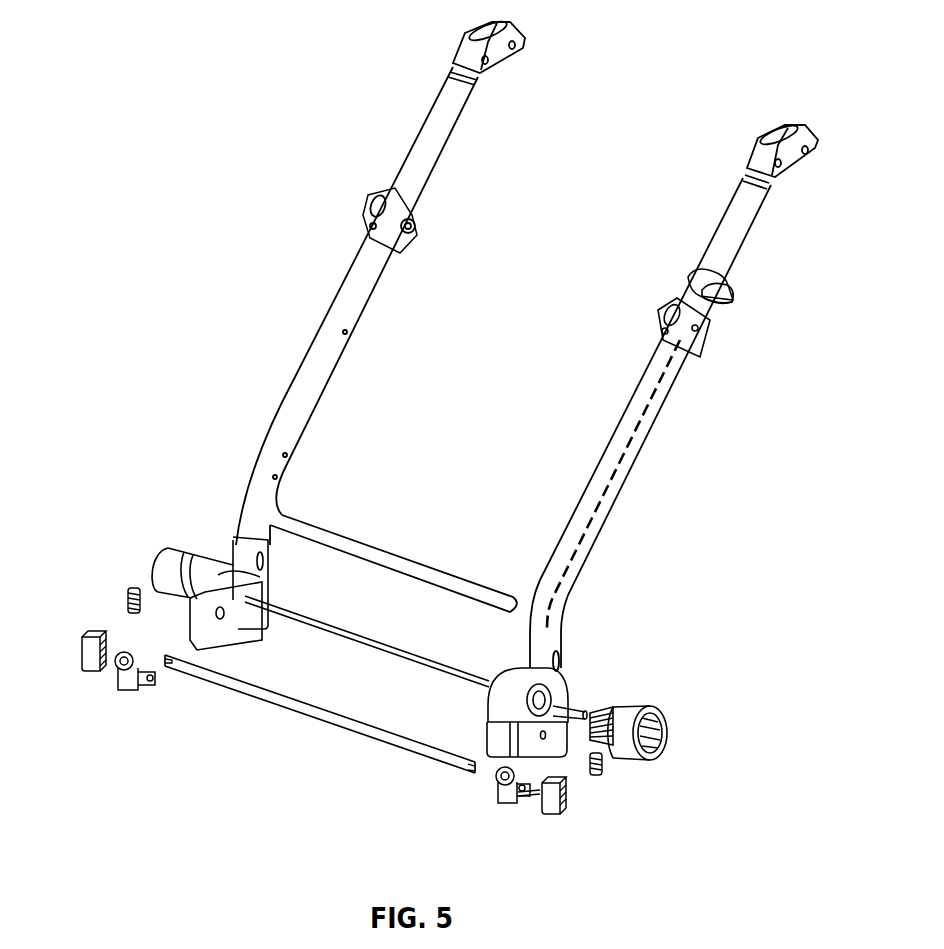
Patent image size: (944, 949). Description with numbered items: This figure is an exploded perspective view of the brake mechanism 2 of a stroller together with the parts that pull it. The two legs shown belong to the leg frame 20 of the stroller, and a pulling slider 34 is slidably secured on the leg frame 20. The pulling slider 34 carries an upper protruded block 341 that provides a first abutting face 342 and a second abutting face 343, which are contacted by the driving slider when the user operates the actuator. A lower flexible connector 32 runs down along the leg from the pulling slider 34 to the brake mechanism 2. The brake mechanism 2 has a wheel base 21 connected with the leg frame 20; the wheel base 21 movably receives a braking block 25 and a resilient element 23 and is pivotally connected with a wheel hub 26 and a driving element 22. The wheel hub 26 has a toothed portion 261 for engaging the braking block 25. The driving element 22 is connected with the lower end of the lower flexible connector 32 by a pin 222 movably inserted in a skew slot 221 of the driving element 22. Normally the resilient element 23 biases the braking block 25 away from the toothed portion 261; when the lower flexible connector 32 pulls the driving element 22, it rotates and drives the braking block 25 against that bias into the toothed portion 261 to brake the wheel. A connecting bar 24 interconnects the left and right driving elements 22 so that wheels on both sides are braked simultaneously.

The brake mechanism 2 is at (673, 697).
The leg frame 20 is at (300, 387).
The wheel base 21 is at (243, 627).
The driving element 22 is at (315, 768).
The skew slot 221 is at (523, 793).
The pin 222 is at (535, 797).
The resilient element 23 is at (126, 600).
The connecting bar 24 is at (335, 717).
The braking block 25 is at (87, 657).
The wheel hub 26 is at (663, 705).
The toothed portion 261 is at (607, 707).
The lower flexible connector 32 is at (597, 517).
The pulling slider 34 is at (735, 321).
The upper protruded block 341 is at (733, 297).
The first abutting face 342 is at (723, 303).
The second abutting face 343 is at (713, 307).